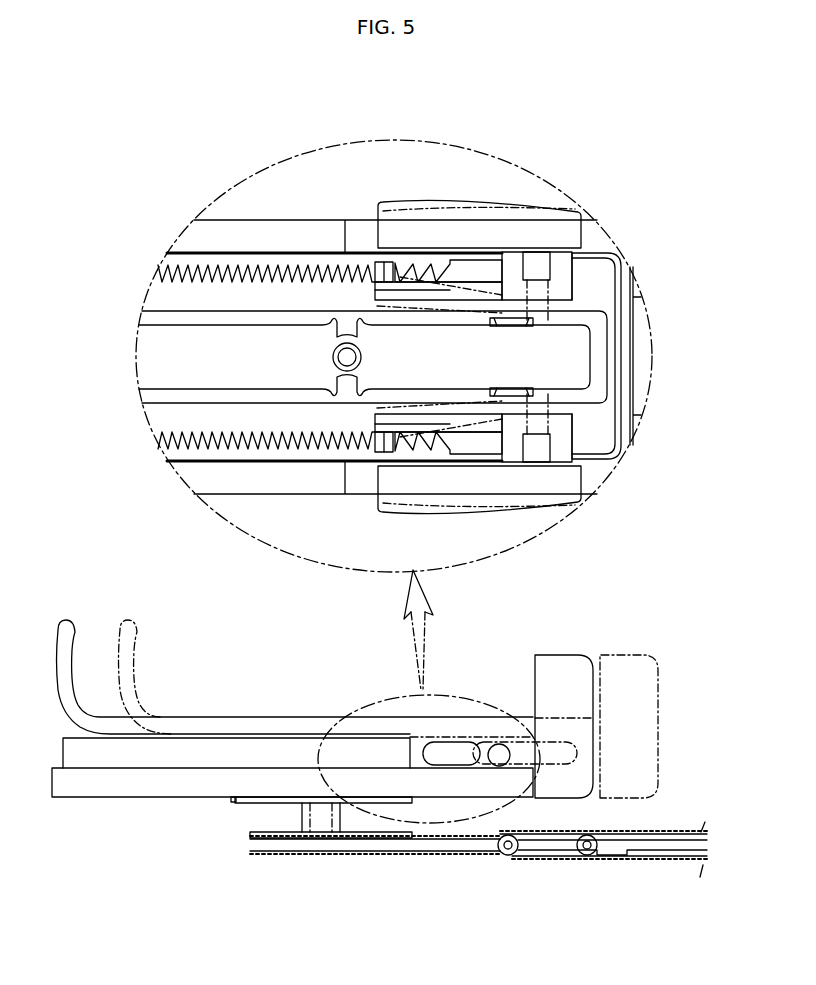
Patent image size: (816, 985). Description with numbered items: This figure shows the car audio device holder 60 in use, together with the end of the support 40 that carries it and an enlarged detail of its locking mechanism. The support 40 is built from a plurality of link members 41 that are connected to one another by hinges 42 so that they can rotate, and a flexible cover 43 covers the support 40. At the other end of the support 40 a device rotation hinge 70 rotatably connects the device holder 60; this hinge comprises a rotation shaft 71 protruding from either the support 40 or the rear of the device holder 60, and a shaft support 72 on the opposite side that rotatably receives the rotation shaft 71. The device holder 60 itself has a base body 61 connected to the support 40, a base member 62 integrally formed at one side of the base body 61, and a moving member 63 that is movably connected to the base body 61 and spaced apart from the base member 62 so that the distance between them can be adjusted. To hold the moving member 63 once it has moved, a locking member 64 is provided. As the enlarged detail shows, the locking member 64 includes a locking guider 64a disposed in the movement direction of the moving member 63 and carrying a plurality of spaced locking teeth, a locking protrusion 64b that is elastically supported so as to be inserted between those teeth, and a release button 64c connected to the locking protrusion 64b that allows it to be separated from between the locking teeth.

The support 40 is at (640, 886).
The link members 41 is at (410, 852).
The hinges 42 is at (507, 856).
The cover 43 is at (378, 852).
The device holder 60 is at (140, 821).
The base body 61 is at (68, 787).
The base member 62 is at (566, 655).
The moving member 63 is at (165, 368).
The locking member 64 is at (483, 101).
The locking guider 64a is at (377, 268).
The locking protrusion 64b is at (394, 273).
The release button 64c is at (456, 199).
The device rotation hinge 70 is at (335, 925).
The rotation shaft 71 is at (330, 822).
The shaft support 72 is at (302, 818).